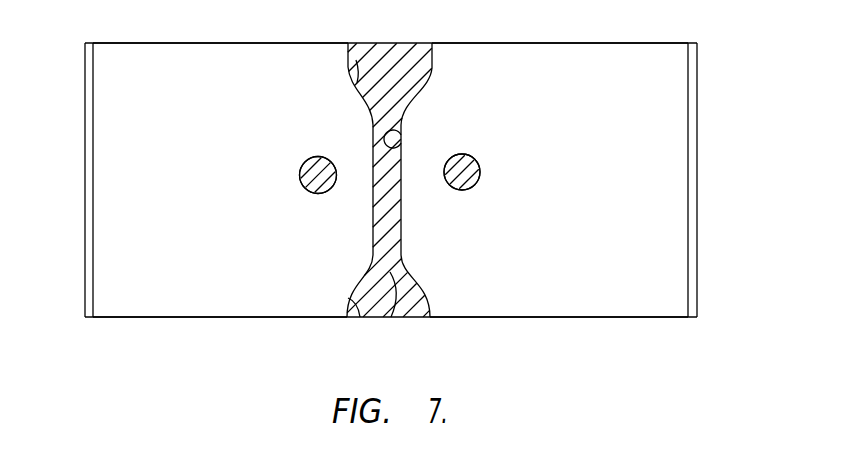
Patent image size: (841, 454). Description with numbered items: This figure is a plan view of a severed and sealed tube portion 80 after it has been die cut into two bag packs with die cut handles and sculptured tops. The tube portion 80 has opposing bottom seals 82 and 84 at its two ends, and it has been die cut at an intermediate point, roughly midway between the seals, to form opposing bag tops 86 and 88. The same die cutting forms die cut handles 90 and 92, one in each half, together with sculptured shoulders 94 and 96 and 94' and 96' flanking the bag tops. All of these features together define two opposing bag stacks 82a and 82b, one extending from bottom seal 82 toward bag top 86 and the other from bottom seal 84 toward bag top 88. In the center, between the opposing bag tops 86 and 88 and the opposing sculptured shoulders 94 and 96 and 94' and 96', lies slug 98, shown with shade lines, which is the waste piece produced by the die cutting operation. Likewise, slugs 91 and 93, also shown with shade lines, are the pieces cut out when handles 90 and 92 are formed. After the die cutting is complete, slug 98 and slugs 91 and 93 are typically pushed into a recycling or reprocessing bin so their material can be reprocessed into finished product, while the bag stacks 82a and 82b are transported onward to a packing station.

The severed and sealed tube portion 80 is at (244, 323).
The bottom seal 82 is at (93, 150).
The bag stack 82a is at (172, 187).
The bag stack 82b is at (597, 168).
The bottom seal 84 is at (688, 127).
The bag top 86 is at (372, 128).
The bag top 88 is at (402, 122).
The die cut handle 90 is at (319, 194).
The slug 91 is at (307, 162).
The die cut handle 92 is at (467, 190).
The slug 93 is at (463, 154).
The sculptured shoulder 94 is at (343, 45).
The sculptured shoulder 96 is at (463, 39).
The sculptured shoulder 94' is at (330, 332).
The sculptured shoulder 96' is at (462, 329).
The slug 98 is at (388, 317).